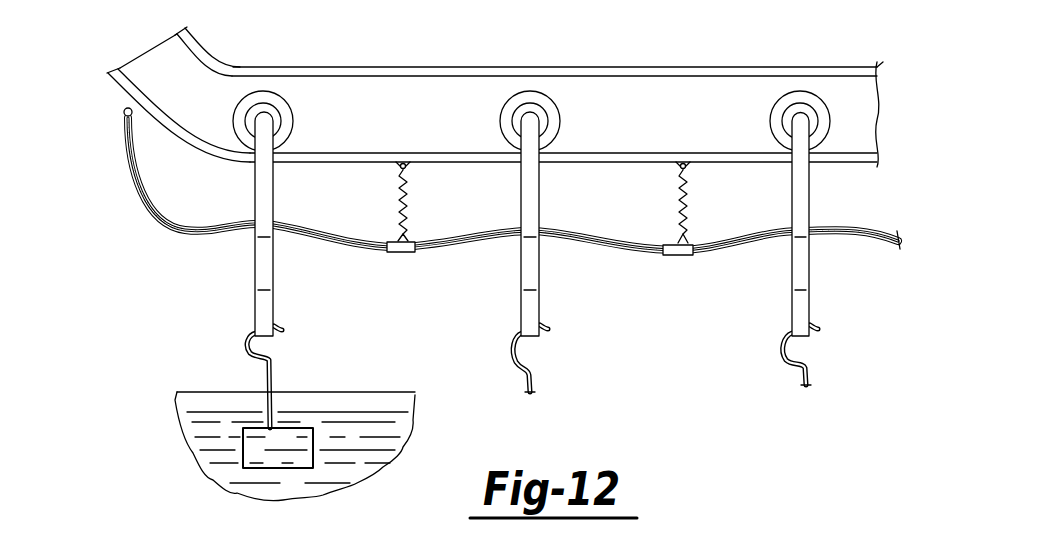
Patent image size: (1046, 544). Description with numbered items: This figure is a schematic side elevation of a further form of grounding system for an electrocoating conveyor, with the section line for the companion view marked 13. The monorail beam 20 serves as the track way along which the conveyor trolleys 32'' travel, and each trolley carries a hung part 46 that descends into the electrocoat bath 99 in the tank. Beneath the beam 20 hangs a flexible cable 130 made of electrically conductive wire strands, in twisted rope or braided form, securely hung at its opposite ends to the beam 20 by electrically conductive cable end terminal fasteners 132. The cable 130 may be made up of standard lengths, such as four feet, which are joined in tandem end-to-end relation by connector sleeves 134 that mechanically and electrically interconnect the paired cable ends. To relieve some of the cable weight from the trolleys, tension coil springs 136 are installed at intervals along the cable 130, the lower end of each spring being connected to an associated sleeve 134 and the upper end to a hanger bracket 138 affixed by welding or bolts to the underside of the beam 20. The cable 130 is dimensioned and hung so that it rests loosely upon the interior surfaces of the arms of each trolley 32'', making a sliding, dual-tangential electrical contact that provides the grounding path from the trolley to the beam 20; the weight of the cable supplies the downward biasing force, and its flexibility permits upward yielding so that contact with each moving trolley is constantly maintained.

The monorail beam 20 is at (890, 108).
The trolley 32'' is at (490, 259).
The part 46 is at (313, 455).
The electrocoat bath 99 is at (326, 387).
The flexible cable 130 is at (186, 234).
The cable end terminal fastener 132 is at (124, 110).
The connector sleeve 134 is at (398, 254).
The tension coil spring 136 is at (404, 207).
The hanger bracket 138 is at (672, 165).
The section line 13- 13 is at (527, 13).